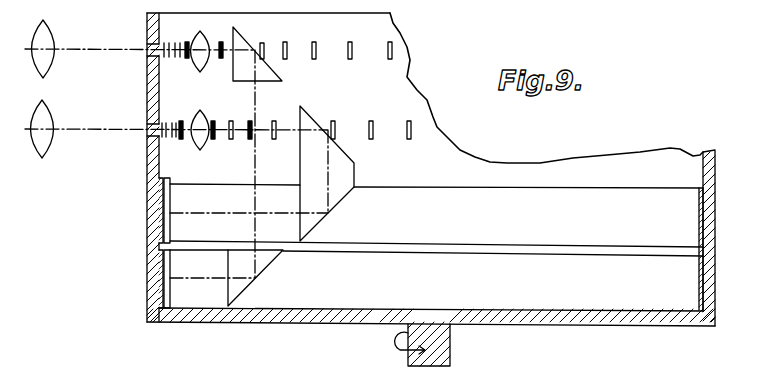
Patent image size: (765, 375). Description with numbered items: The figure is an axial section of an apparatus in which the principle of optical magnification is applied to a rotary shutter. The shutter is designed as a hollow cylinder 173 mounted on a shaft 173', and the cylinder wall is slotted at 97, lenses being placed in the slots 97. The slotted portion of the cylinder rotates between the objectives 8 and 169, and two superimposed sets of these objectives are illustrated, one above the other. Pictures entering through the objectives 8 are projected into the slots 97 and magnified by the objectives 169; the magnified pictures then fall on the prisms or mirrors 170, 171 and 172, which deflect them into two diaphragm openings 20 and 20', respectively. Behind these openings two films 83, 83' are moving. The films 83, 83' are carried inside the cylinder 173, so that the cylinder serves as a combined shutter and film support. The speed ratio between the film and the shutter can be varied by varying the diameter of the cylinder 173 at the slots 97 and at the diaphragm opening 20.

The objective 8 is at (53, 93).
The slot 97 is at (147, 140).
The objective 169 is at (197, 142).
The prism or mirror 170 is at (246, 48).
The prism or mirror 171 is at (262, 266).
The prism or mirror 172 is at (348, 175).
The hollow cylinder 173 is at (431, 169).
The shaft 173' is at (444, 344).
The film 83 is at (134, 284).
The film 83' is at (134, 211).
The diaphragm opening 20 is at (169, 279).
The diaphragm opening 20' is at (185, 210).